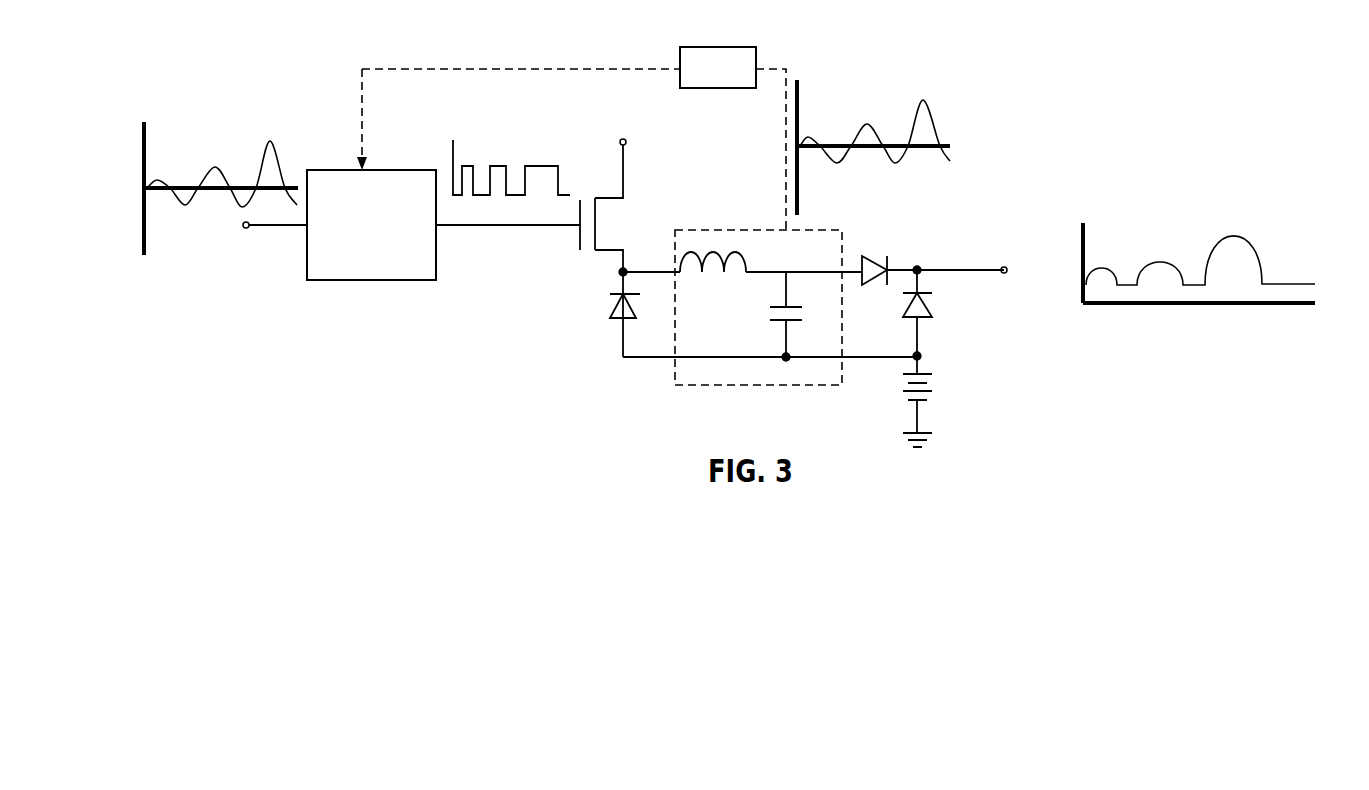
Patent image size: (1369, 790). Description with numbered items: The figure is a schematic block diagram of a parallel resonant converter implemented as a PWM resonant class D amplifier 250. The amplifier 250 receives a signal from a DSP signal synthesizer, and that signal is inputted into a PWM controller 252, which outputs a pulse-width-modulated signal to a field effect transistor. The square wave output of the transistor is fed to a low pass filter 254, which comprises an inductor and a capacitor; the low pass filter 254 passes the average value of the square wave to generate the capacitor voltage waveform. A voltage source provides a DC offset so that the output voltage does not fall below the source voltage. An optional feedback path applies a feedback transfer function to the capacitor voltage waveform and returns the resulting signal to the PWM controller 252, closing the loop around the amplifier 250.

The PWM resonant class D amplifier 250 is at (1046, 82).
The PWM controller 252 is at (390, 267).
The low pass filter 254 is at (710, 386).